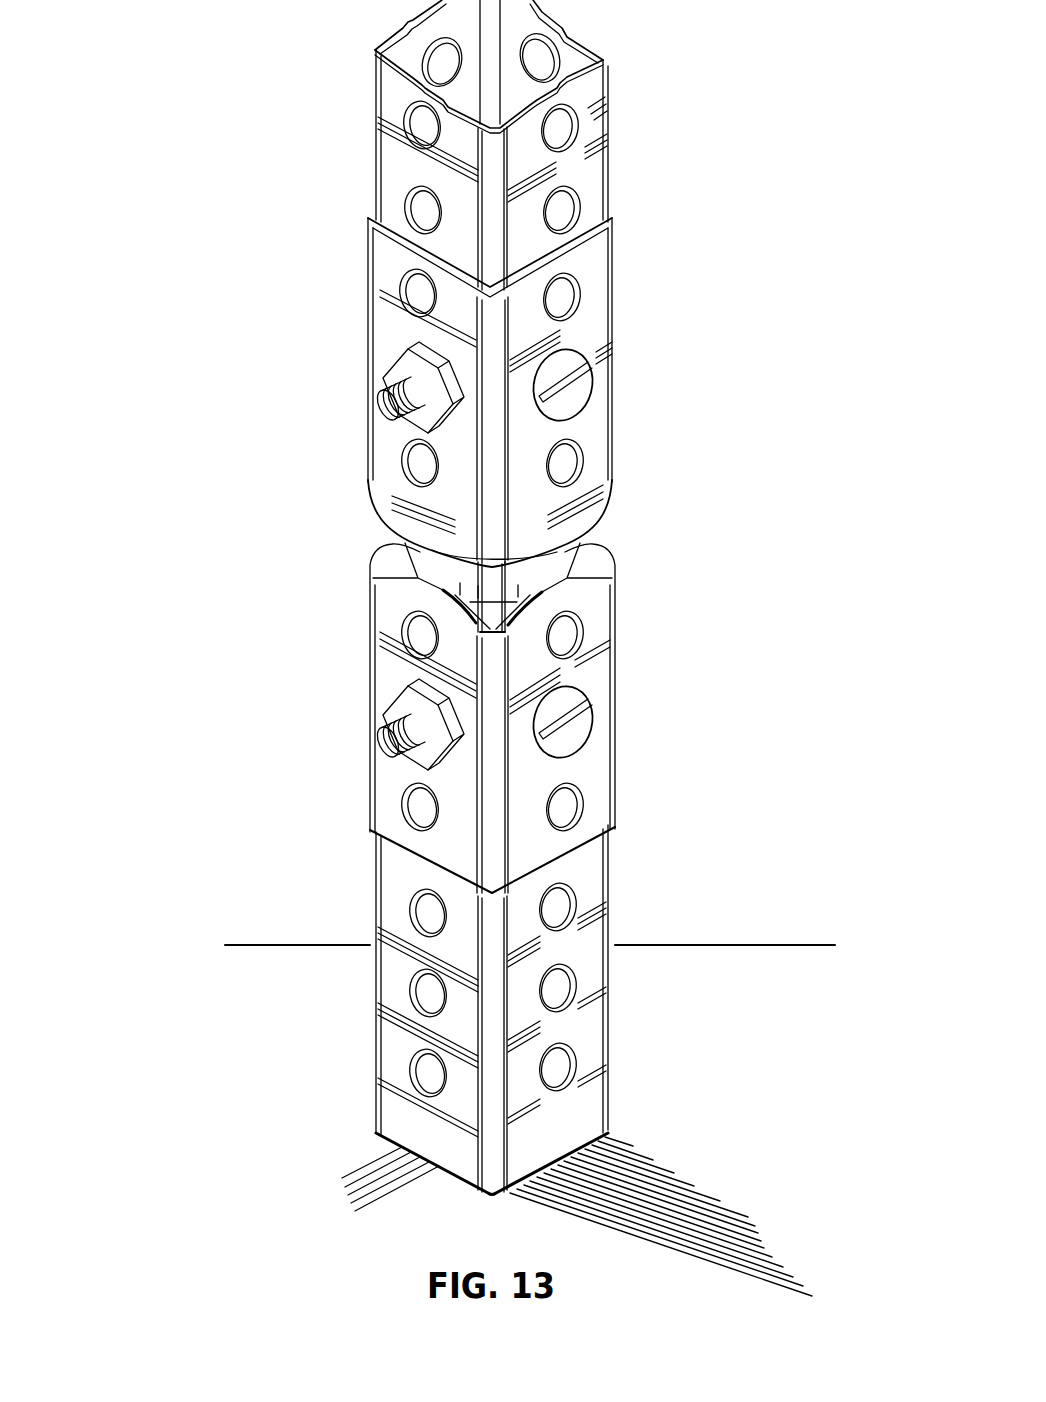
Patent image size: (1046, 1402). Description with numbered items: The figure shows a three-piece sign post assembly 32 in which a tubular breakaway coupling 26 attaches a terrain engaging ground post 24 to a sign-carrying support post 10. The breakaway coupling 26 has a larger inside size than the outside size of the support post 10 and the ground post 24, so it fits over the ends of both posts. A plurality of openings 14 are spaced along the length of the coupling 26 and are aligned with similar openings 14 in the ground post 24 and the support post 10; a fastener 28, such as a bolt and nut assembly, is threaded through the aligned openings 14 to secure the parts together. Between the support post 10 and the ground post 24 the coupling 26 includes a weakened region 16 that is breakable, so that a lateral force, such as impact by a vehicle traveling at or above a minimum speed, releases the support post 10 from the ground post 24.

The support post 10 is at (607, 188).
The openings 14 is at (562, 130).
The weakened region 16 is at (358, 465).
The ground post 24 is at (610, 892).
The breakaway coupling 26 is at (617, 605).
The fastener 28 is at (382, 405).
The three-piece sign post assembly 32 is at (188, 448).